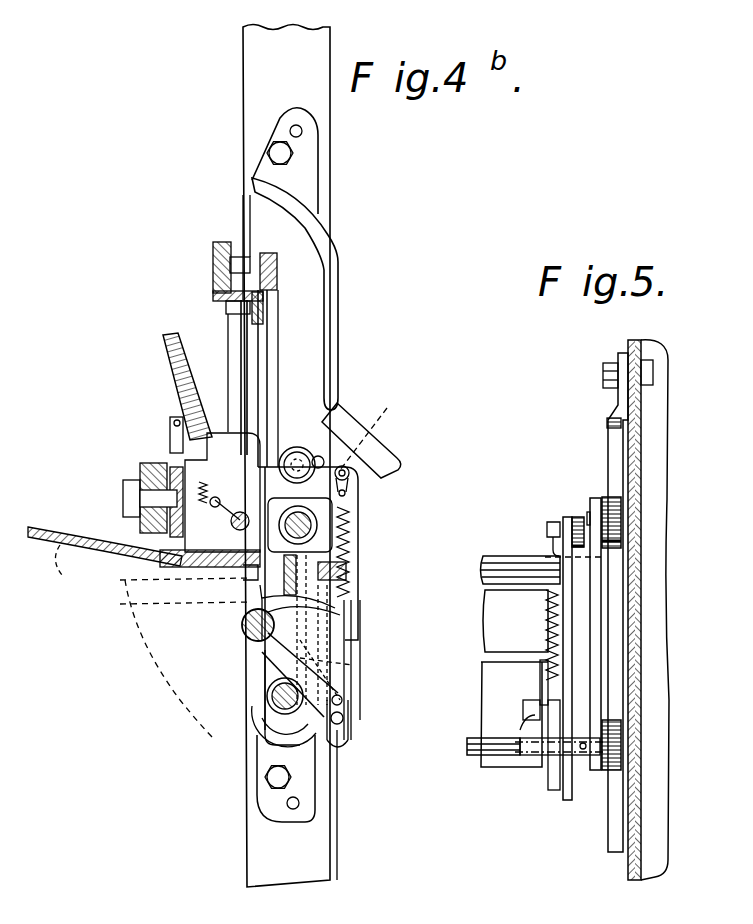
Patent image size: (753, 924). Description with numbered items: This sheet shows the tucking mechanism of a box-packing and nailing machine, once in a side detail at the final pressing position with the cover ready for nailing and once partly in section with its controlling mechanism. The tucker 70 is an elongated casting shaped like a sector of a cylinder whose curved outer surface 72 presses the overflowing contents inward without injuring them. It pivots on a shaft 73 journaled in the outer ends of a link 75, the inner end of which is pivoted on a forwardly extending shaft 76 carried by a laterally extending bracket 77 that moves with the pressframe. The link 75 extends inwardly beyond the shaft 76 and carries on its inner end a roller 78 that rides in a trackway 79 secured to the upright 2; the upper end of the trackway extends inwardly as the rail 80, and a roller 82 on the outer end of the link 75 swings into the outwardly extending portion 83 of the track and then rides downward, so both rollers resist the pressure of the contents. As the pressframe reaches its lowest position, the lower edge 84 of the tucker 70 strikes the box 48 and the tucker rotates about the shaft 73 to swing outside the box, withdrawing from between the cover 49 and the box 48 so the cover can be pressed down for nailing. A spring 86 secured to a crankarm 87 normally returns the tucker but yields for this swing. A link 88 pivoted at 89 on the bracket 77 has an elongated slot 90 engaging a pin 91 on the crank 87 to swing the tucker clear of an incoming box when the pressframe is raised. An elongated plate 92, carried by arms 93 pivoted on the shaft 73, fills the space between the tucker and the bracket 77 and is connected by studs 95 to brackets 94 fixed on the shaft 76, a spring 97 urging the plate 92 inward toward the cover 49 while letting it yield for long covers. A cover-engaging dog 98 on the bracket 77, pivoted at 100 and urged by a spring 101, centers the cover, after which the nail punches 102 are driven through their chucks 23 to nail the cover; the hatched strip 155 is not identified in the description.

In FIG. 4b, the upright 2 is at (243, 46).
In FIG. 5, the upright 2 is at (655, 780).
In FIG. 4b, the chuck 23 is at (195, 448).
In FIG. 4b, the box 48 is at (135, 625).
In FIG. 4b, the cover 49 is at (118, 556).
In FIG. 4b, the tucker 70 is at (292, 613).
In FIG. 5, the tucker 70 is at (492, 685).
In FIG. 4b, the curved outer surface 72 is at (360, 660).
In FIG. 5, the curved outer surface 72 is at (490, 669).
In FIG. 4b, the shaft 73 is at (266, 698).
In FIG. 5, the shaft 73 is at (478, 756).
In FIG. 4b, the link 75 is at (360, 445).
In FIG. 5, the link 75 is at (600, 655).
In FIG. 4b, the shaft 76 is at (320, 527).
In FIG. 5, the shaft 76 is at (500, 563).
In FIG. 4b, the bracket 77 is at (330, 455).
In FIG. 5, the bracket 77 is at (577, 516).
In FIG. 4b, the roller 78 is at (310, 450).
In FIG. 5, the roller 78 is at (624, 500).
In FIG. 4b, the trackway 79 is at (315, 265).
In FIG. 5, the trackway 79 is at (620, 470).
In FIG. 4b, the inwardly extending portion of trackway 80 is at (243, 200).
In FIG. 4b, the roller 82 is at (270, 722).
In FIG. 5, the roller 82 is at (618, 724).
In FIG. 4b, the outwardly extending portion of trackway 83 is at (372, 455).
In FIG. 4b, the lower edge of tucker 84 is at (243, 630).
In FIG. 4b, the spring 86 is at (340, 608).
In FIG. 5, the spring 86 is at (546, 639).
In FIG. 4b, the crankarm 87 is at (345, 738).
In FIG. 5, the crankarm 87 is at (530, 716).
In FIG. 4b, the link 88 is at (362, 688).
In FIG. 5, the link 88 is at (576, 622).
In FIG. 4b, the pivot 89 is at (351, 476).
In FIG. 5, the pivot 89 is at (547, 528).
In FIG. 4b, the elongated slot 90 is at (338, 750).
In FIG. 4b, the pin 91 is at (350, 719).
In FIG. 5, the pin 91 is at (525, 708).
In FIG. 4b, the plate 92 is at (252, 595).
In FIG. 5, the plate 92 is at (492, 615).
In FIG. 4b, the arms 93 is at (352, 665).
In FIG. 5, the arms 93 is at (547, 620).
In FIG. 4b, the brackets 94 is at (350, 582).
In FIG. 4b, the studs 95 is at (351, 555).
In FIG. 4b, the spring 97 is at (320, 598).
In FIG. 4b, the cover-engaging dog 98 is at (250, 575).
In FIG. 4b, the pivot 100 is at (236, 516).
In FIG. 4b, the spring 101 is at (209, 492).
In FIG. 4b, the nail punch 102 is at (237, 355).
In FIG. 4b, the brake strip 155 is at (168, 356).